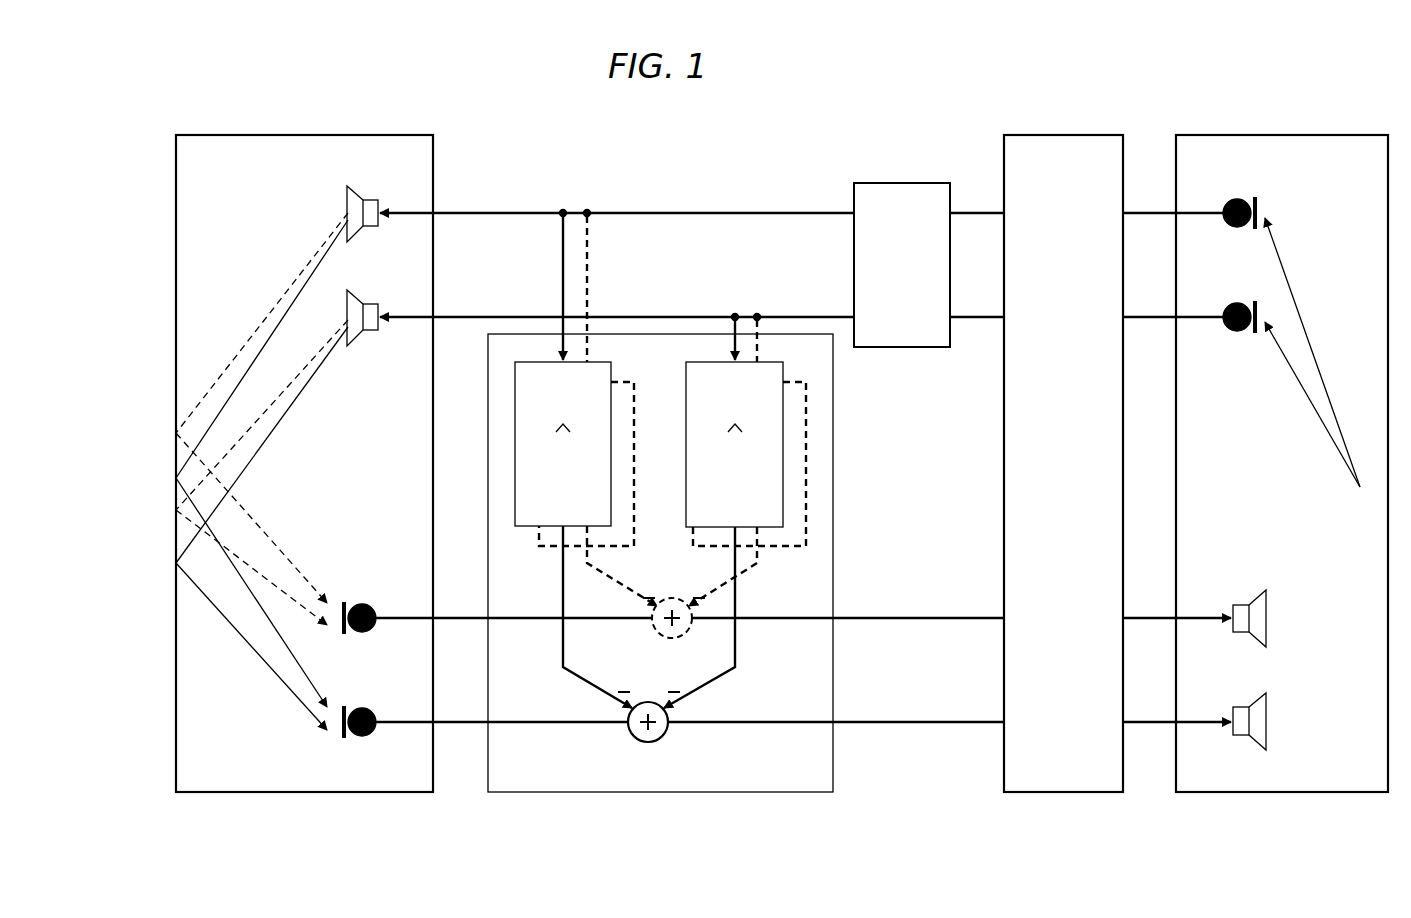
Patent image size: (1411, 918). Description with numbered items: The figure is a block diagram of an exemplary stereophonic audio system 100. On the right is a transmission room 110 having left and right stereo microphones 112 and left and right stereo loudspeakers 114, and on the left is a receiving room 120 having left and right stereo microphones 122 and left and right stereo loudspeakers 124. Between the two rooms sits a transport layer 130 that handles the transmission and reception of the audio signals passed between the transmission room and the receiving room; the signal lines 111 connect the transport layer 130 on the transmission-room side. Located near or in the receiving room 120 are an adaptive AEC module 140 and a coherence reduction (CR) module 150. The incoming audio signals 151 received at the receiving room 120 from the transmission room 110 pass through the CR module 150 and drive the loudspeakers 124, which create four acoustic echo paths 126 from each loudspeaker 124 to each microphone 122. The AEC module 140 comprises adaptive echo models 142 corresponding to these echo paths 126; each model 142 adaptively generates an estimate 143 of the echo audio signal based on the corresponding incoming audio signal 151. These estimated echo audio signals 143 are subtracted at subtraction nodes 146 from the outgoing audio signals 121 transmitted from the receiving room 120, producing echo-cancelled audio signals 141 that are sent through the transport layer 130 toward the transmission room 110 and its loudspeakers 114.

The stereophonic audio system 100 is at (686, 124).
The transmission room 110 is at (1340, 134).
The transmission signal lines 111 is at (976, 217).
The left and right stereo microphones 112 is at (1237, 230).
The left and right stereo loudspeakers 114 is at (1240, 634).
The receiving room 120 is at (340, 134).
The outgoing audio signals 121 is at (457, 622).
The left and right stereo microphones 122 is at (365, 635).
The left and right stereo loudspeakers 124 is at (378, 230).
The acoustic echo paths 126 is at (246, 340).
The transport layer 130 is at (1070, 134).
The adaptive AEC module 140 is at (833, 456).
The echo-cancelled audio signals 141 is at (907, 622).
The adaptive echo models 142 is at (700, 520).
The estimated echo audio signals 143 is at (563, 573).
The subtraction nodes 146 is at (660, 640).
The coherence reduction (CR) module 150 is at (898, 183).
The incoming audio signals 151 is at (667, 217).